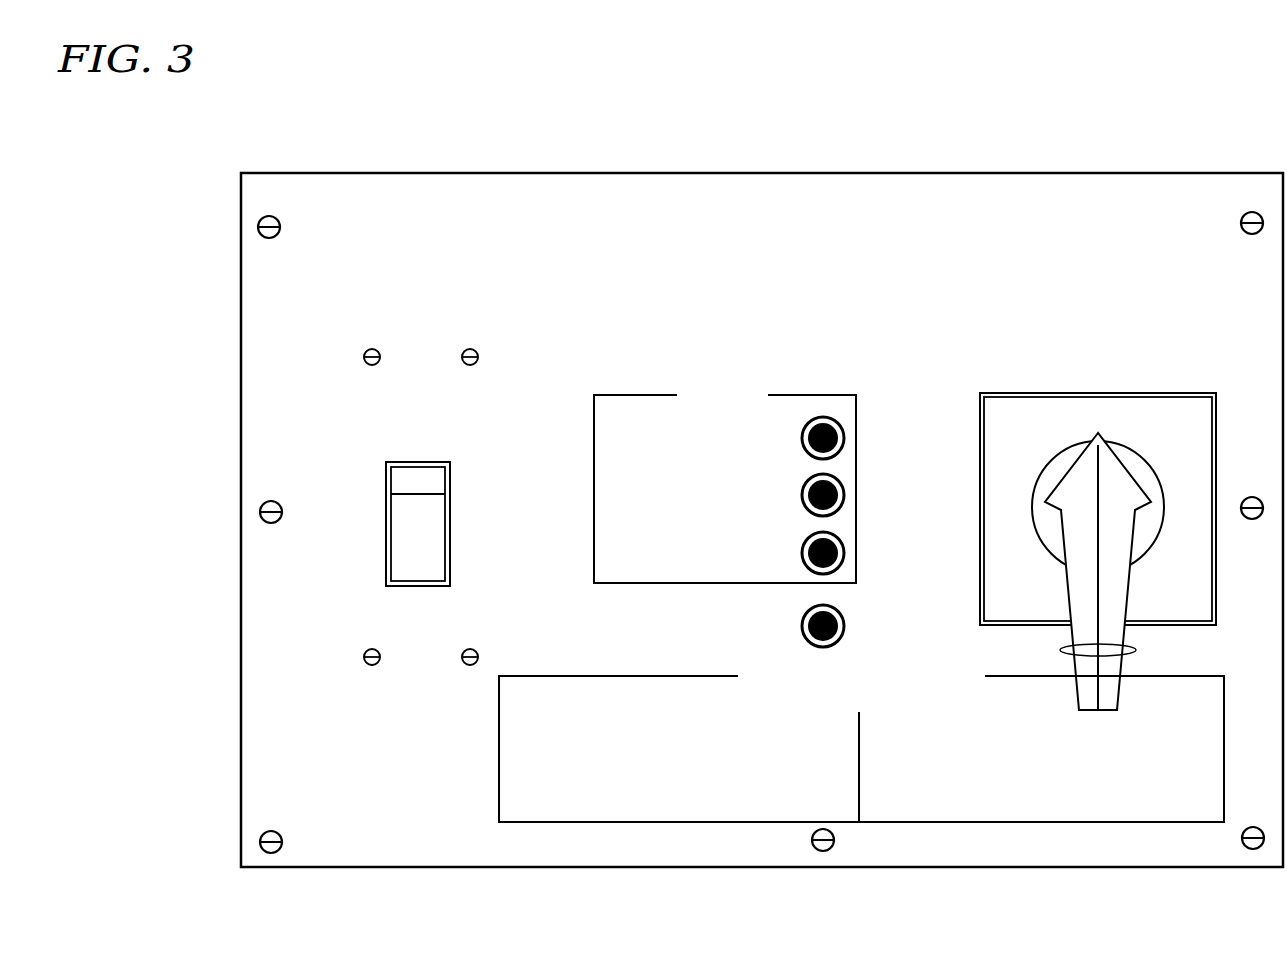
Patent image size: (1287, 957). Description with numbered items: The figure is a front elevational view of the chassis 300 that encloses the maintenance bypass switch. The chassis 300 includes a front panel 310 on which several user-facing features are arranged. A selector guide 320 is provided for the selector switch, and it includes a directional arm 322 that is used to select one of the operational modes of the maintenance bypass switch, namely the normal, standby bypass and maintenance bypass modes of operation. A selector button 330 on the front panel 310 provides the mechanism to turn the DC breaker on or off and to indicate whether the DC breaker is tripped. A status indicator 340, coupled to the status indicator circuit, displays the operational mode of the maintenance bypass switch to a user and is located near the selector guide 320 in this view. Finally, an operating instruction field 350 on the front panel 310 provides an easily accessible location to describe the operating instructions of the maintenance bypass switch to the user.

The chassis 300 is at (735, 148).
The front panel 310 is at (362, 226).
The selector guide 320 is at (980, 393).
The directional arm 322 is at (1137, 650).
The selector button 330 is at (450, 476).
The status indicator 340 is at (813, 394).
The operating instruction field 350 is at (592, 713).